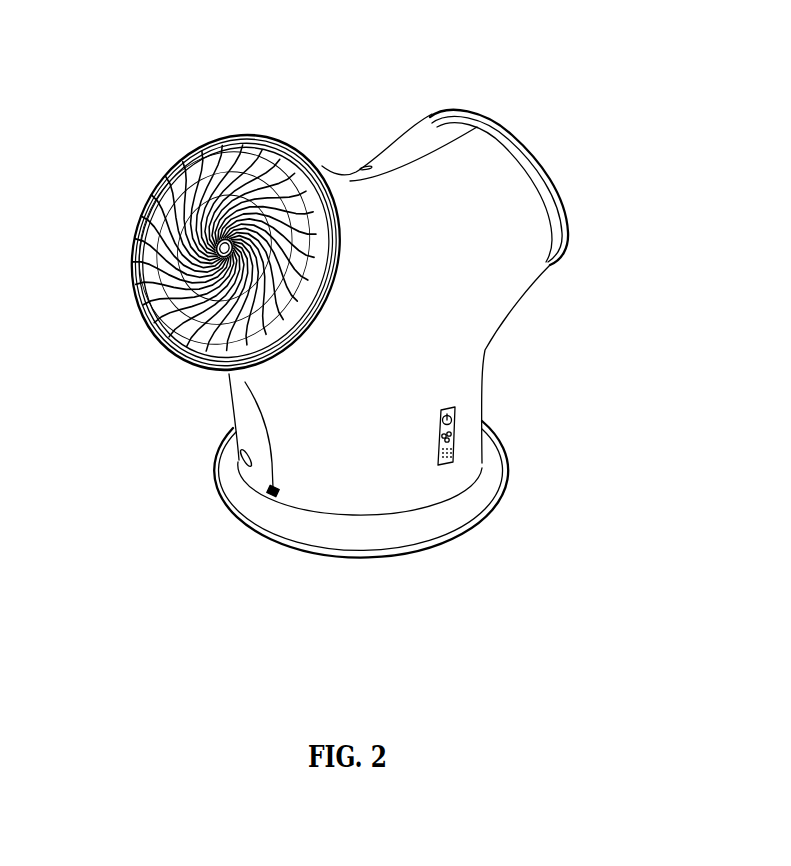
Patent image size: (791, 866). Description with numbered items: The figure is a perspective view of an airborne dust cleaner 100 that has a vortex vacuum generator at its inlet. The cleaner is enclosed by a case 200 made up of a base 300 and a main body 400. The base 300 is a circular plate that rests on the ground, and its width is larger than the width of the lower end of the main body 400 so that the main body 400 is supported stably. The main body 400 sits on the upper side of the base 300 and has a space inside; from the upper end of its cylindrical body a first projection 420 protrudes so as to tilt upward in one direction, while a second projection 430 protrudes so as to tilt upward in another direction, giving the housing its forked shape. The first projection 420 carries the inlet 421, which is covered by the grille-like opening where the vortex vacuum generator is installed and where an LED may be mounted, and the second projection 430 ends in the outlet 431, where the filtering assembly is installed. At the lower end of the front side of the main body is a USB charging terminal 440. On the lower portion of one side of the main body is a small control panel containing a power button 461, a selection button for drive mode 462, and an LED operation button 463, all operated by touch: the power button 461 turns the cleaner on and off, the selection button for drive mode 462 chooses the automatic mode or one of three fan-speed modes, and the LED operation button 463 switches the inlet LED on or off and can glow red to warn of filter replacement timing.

The airborne dust cleaner 100 is at (103, 51).
The case 200 is at (332, 681).
The base 300 is at (372, 538).
The main body 400 is at (327, 488).
The first projection 420 is at (335, 167).
The inlet 421 is at (140, 227).
The second projection 430 is at (412, 150).
The outlet 431 is at (537, 163).
The USB charging terminal 440 is at (270, 497).
The power button 461 is at (455, 417).
The selection button for drive mode 462 is at (456, 432).
The LED operation button 463 is at (453, 460).